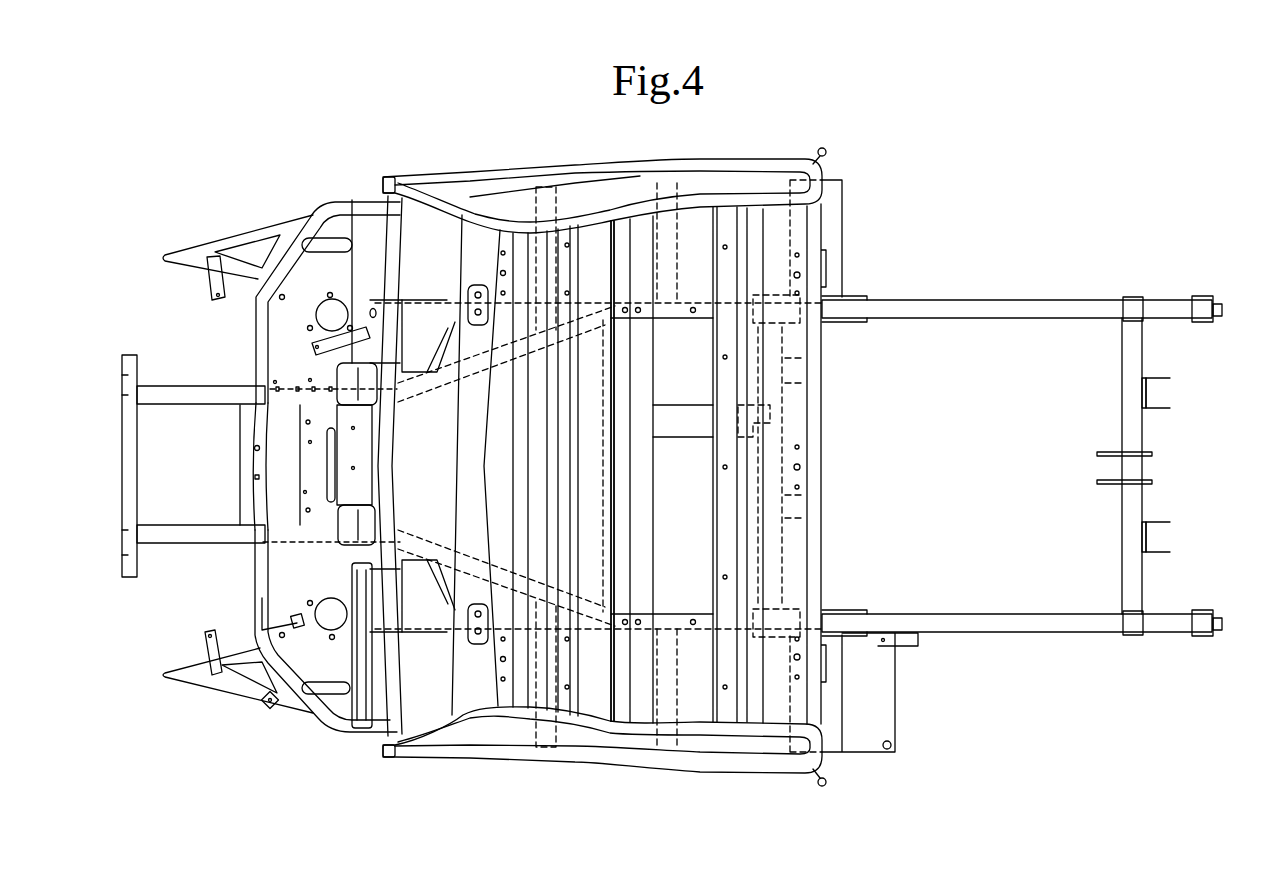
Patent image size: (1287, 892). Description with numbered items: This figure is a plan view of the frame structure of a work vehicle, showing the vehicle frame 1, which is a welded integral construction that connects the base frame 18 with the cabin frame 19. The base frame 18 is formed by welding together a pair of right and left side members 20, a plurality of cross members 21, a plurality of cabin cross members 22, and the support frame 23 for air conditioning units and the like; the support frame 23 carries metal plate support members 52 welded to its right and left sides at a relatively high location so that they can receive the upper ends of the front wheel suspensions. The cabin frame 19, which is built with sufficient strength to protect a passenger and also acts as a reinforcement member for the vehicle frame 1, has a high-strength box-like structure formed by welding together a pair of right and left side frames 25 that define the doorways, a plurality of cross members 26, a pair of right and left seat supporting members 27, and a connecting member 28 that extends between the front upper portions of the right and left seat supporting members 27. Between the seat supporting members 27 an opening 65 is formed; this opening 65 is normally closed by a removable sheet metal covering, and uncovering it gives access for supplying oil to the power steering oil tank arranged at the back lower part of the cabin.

The vehicle frame 1 is at (1058, 170).
The base frame 18 is at (982, 624).
The cabin frame 19 is at (450, 176).
The side member 20 is at (175, 540).
The cross member 21 is at (300, 464).
The cabin cross member 22 is at (540, 212).
The support frame 23 is at (297, 684).
The side frame 25 is at (733, 164).
The cross member 26 is at (462, 445).
The seat supporting member 27 is at (665, 288).
The connecting member 28 is at (630, 470).
The metal plate support member 52 is at (306, 320).
The opening 65 is at (695, 527).